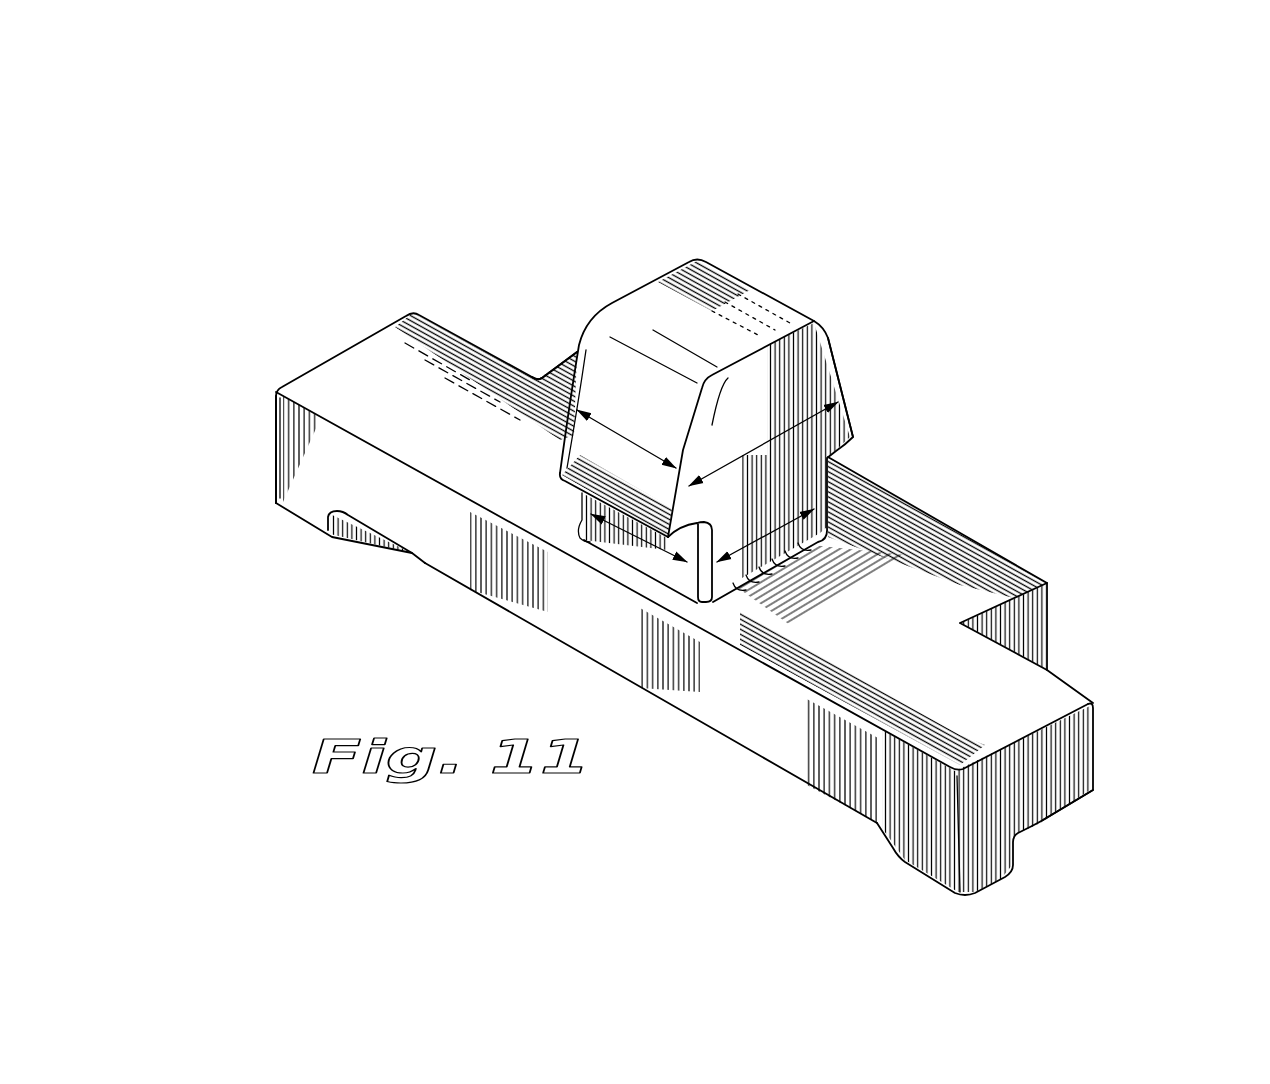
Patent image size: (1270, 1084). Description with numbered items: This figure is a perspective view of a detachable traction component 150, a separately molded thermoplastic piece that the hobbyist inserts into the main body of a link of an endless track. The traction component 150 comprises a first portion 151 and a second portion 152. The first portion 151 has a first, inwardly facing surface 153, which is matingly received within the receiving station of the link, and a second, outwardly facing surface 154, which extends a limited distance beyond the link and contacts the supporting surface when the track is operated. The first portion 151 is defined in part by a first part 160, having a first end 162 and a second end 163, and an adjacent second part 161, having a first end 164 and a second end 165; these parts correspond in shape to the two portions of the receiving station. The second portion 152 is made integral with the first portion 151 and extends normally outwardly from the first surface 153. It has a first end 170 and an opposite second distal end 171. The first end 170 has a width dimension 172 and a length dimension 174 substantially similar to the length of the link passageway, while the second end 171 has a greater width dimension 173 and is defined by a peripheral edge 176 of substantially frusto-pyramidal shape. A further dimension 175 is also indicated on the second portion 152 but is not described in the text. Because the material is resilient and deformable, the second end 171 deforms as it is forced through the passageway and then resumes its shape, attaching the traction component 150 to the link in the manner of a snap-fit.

The detachable traction component 150 is at (693, 491).
The first portion 151 is at (360, 386).
The second portion 152 is at (851, 366).
The first, inwardly facing surface 153 is at (939, 591).
The second, outwardly facing surface 154 is at (839, 826).
The first part 160 is at (1028, 702).
The second part 161 is at (1012, 568).
The first end 162 is at (301, 379).
The second end 163 is at (1073, 771).
The first end 164 is at (561, 375).
The second end 165 is at (1034, 620).
The first end 170 is at (806, 484).
The second distal end 171 is at (822, 346).
The width dimension 172 is at (786, 527).
The width dimension 173 is at (848, 404).
The length dimension 174 is at (677, 539).
The housing width 175 is at (624, 436).
The peripheral edge 176 is at (745, 281).